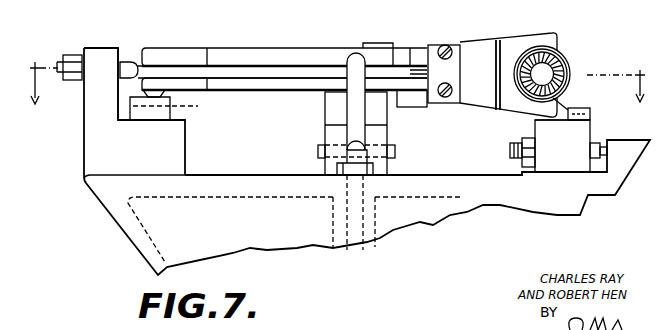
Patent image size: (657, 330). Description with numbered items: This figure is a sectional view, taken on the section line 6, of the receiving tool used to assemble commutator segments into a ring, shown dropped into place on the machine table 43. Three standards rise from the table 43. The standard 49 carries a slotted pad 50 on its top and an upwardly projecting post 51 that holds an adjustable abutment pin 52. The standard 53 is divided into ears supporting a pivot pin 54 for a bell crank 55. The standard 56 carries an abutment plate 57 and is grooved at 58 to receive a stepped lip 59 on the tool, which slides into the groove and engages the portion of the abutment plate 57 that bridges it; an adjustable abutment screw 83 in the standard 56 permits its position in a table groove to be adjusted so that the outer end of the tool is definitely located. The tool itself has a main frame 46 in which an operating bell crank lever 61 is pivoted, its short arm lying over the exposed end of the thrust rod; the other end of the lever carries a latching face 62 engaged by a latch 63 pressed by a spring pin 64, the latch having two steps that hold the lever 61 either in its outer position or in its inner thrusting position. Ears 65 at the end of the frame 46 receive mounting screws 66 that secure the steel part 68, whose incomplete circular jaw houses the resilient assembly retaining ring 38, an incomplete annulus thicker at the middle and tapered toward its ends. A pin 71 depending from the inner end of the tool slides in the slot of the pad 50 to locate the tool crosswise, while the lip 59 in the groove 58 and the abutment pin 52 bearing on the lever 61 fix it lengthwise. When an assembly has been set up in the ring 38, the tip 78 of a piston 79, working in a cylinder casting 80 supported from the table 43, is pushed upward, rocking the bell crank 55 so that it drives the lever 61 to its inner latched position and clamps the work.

The resilient assembly retaining ring 38 is at (563, 62).
The table 43 is at (252, 175).
The tool main frame 46 is at (267, 44).
The standard 49 is at (97, 175).
The slotted pad 50 is at (162, 110).
The post 51 is at (96, 47).
The adjustable abutment pin 52 is at (124, 62).
The standard 53 is at (338, 165).
The pivot pin 54 is at (320, 152).
The bell crank 55 is at (353, 105).
The standard 56 is at (553, 163).
The abutment plate 57 is at (584, 109).
The groove 58 is at (594, 132).
The stepped lip 59 is at (556, 120).
The operating bell crank lever 61 is at (298, 68).
The latching face 62 is at (372, 68).
The latch 63 is at (388, 70).
The spring pin 64 is at (416, 93).
The ears 65 is at (438, 27).
The mounting screws 66 is at (450, 47).
The steel part 68 is at (505, 43).
The pin 71 is at (200, 106).
The piston tip 78 is at (372, 179).
The piston 79 is at (333, 213).
The cylinder casting 80 is at (333, 237).
The adjustable abutment screw 83 is at (511, 151).
The section line 6- 6 is at (336, 97).